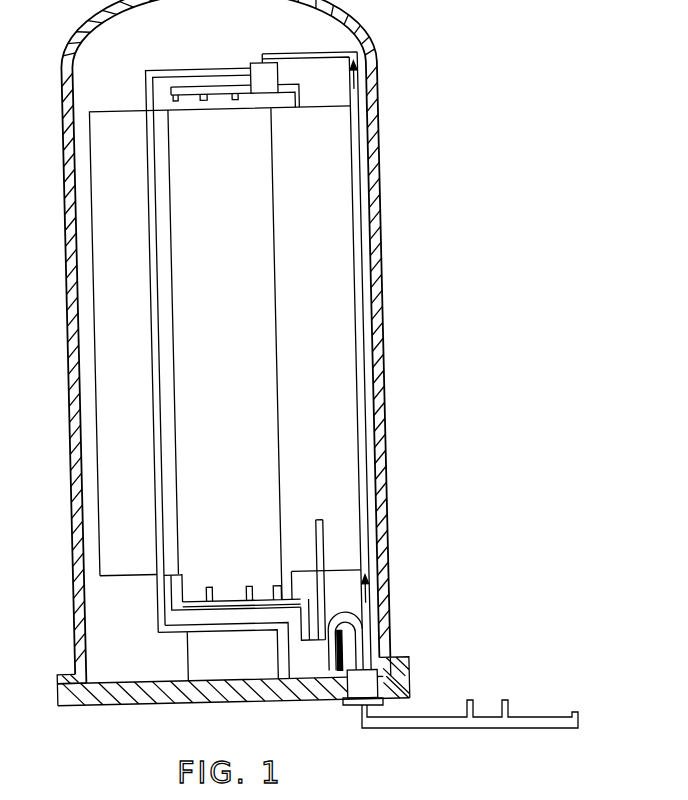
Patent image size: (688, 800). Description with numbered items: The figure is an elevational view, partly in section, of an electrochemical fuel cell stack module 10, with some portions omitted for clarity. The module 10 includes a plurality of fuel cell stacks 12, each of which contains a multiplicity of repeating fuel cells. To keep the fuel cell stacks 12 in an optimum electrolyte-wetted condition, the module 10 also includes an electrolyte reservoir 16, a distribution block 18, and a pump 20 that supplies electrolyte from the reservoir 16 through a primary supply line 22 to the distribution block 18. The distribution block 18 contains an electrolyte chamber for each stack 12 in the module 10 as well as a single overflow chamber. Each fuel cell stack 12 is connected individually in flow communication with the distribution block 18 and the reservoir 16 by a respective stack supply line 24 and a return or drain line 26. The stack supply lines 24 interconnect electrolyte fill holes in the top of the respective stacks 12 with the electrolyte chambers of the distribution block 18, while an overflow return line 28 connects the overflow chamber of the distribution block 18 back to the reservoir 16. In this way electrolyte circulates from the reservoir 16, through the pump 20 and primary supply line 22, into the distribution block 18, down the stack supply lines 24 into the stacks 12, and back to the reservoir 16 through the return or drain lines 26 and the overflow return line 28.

The fuel cell stack module 10 is at (311, 379).
The fuel cell stack 12 is at (111, 301).
The electrolyte reservoir 16 is at (307, 670).
The distribution block 18 is at (263, 63).
The pump 20 is at (351, 708).
The primary supply line 22 is at (377, 542).
The stack supply lines 24 is at (182, 100).
The return or drain lines 26 is at (279, 588).
The overflow return line 28 is at (167, 292).